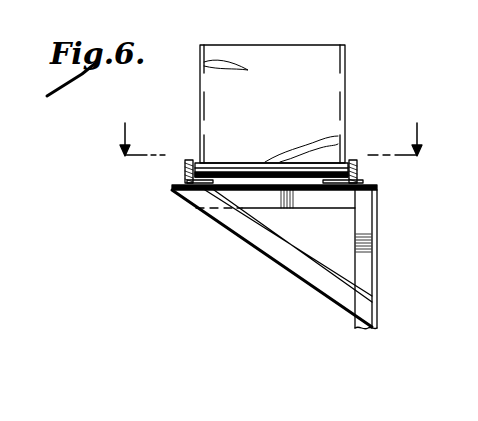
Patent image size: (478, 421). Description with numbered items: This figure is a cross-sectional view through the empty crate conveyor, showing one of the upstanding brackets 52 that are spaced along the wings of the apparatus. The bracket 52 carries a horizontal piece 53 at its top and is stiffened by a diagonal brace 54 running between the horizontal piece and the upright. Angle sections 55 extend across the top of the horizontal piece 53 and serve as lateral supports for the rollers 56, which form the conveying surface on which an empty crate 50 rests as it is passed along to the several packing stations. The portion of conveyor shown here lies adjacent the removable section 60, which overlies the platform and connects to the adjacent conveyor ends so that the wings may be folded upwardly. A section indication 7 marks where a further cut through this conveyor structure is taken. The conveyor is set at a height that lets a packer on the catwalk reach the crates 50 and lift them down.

The section line 7- 7 is at (270, 128).
The empty crate 50 is at (310, 52).
The upstanding bracket 52 is at (368, 217).
The horizontal piece 53 is at (312, 206).
The brace 54 is at (272, 252).
The angle section 55 is at (190, 160).
The roller 56 is at (231, 164).
The removable section 60 is at (185, 170).